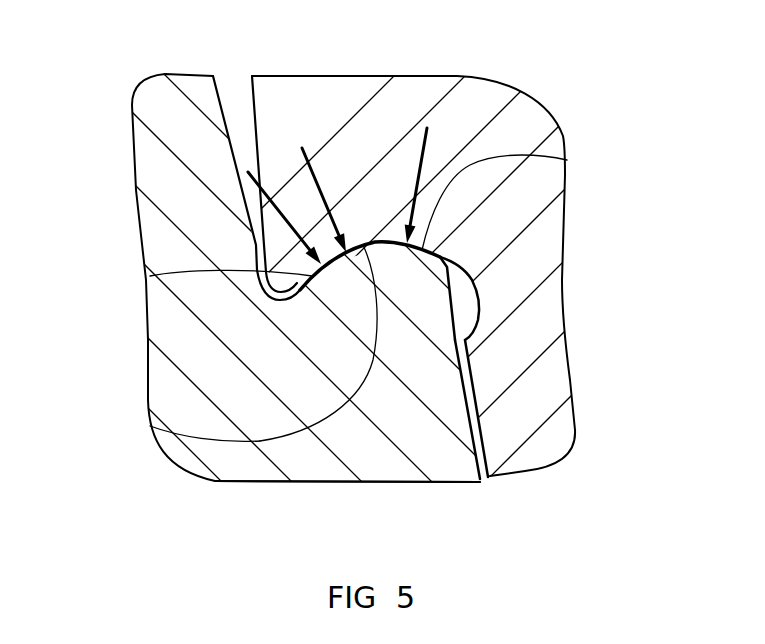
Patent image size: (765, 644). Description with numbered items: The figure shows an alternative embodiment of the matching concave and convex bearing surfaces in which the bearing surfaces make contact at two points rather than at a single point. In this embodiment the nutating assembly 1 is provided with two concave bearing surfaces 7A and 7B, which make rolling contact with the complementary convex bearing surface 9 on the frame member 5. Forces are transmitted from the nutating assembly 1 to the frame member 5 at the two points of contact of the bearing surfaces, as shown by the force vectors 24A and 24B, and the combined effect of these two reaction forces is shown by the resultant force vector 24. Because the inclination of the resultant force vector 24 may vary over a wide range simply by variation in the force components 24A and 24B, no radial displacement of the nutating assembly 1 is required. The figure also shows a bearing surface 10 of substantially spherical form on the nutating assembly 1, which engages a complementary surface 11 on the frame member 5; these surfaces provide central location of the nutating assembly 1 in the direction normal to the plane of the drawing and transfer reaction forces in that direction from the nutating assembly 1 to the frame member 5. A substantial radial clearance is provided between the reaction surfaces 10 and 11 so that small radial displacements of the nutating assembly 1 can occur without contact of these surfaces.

The nutating assembly 1 is at (550, 112).
The frame member 5 is at (317, 482).
The concave bearing surface 7A is at (150, 276).
The concave bearing surface 7B is at (567, 160).
The convex bearing surface 9 is at (150, 426).
The bearing surface 10 is at (470, 372).
The complementary surface 11 is at (481, 418).
The resultant force vector 24 is at (320, 200).
The force vector 24A is at (262, 200).
The force vector 24B is at (418, 178).